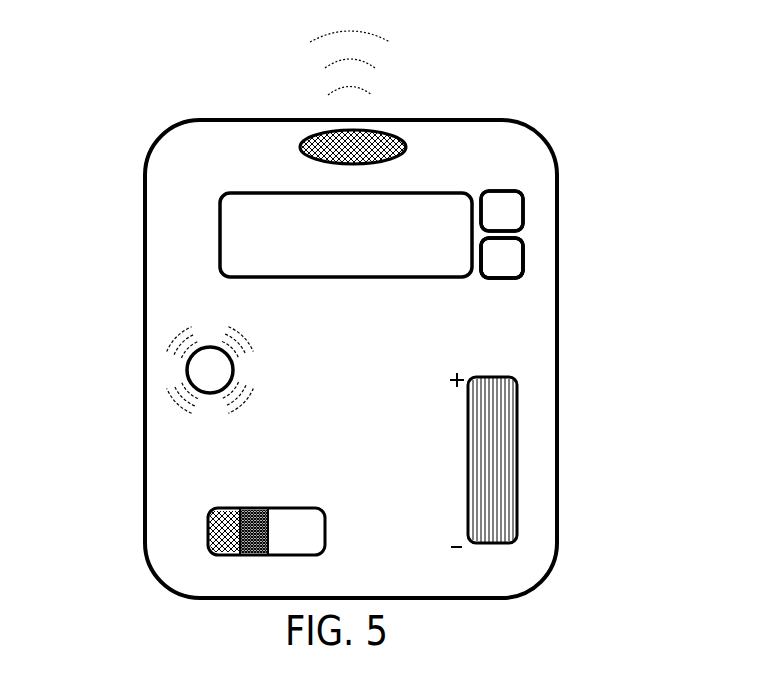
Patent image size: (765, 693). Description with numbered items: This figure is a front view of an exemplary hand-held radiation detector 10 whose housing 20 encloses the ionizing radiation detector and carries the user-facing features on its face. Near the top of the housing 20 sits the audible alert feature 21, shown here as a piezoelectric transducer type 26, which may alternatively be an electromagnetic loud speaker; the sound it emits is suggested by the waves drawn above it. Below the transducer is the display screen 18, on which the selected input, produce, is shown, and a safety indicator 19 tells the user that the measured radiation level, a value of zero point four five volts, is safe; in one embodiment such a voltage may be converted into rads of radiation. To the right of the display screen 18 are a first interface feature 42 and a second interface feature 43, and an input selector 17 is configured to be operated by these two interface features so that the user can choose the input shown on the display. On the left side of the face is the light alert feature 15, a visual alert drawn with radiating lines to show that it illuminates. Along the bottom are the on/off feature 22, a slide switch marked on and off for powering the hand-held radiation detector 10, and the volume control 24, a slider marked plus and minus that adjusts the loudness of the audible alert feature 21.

The hand-held radiation detector 10 is at (185, 125).
The light alert feature 15 is at (197, 380).
The input selector 17 is at (527, 248).
The display screen 18 is at (222, 190).
The safety indicator 19 is at (243, 247).
The housing 20 is at (505, 168).
The audible alert feature 21 is at (388, 135).
The on/off feature 22 is at (210, 508).
The volume control 24 is at (494, 428).
The piezoelectric transducer type 26 is at (313, 135).
The first interface feature 42 is at (503, 205).
The second interface feature 43 is at (503, 263).